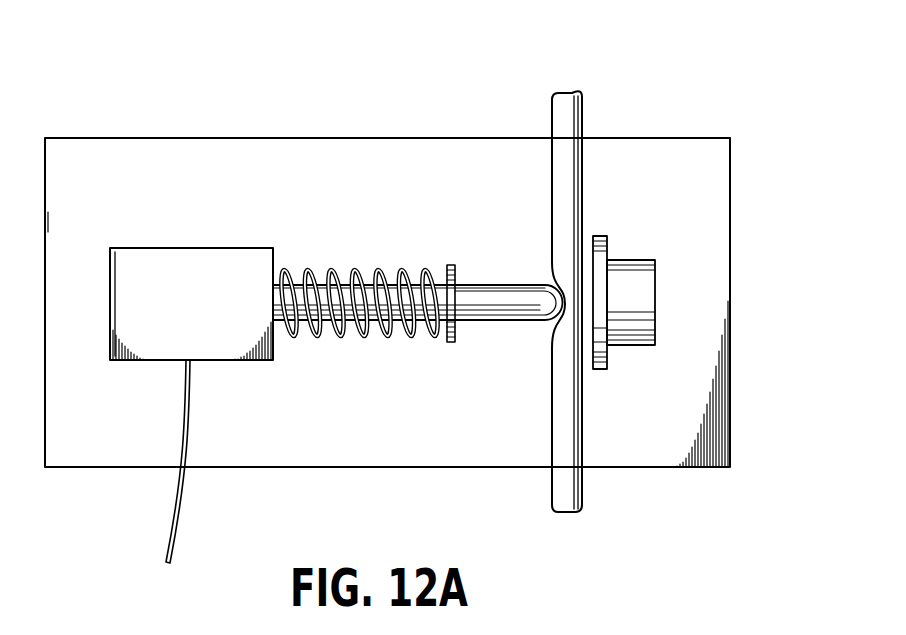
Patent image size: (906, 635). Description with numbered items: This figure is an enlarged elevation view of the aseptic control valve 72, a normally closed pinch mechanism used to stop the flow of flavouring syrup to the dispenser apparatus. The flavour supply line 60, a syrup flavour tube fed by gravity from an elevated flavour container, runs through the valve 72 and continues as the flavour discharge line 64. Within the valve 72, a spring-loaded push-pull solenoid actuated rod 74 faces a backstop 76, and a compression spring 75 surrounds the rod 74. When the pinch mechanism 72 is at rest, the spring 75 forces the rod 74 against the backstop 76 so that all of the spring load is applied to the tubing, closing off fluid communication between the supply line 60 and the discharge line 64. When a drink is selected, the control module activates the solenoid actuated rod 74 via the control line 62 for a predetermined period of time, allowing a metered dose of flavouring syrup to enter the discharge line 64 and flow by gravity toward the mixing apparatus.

The flavour supply line 60 is at (571, 271).
The control line 62 is at (172, 520).
The flavour discharge line 64 is at (578, 424).
The aseptic control valve 72 is at (750, 251).
The solenoid actuated rod 74 is at (230, 253).
The compression spring 75 is at (347, 337).
The backstop 76 is at (598, 236).